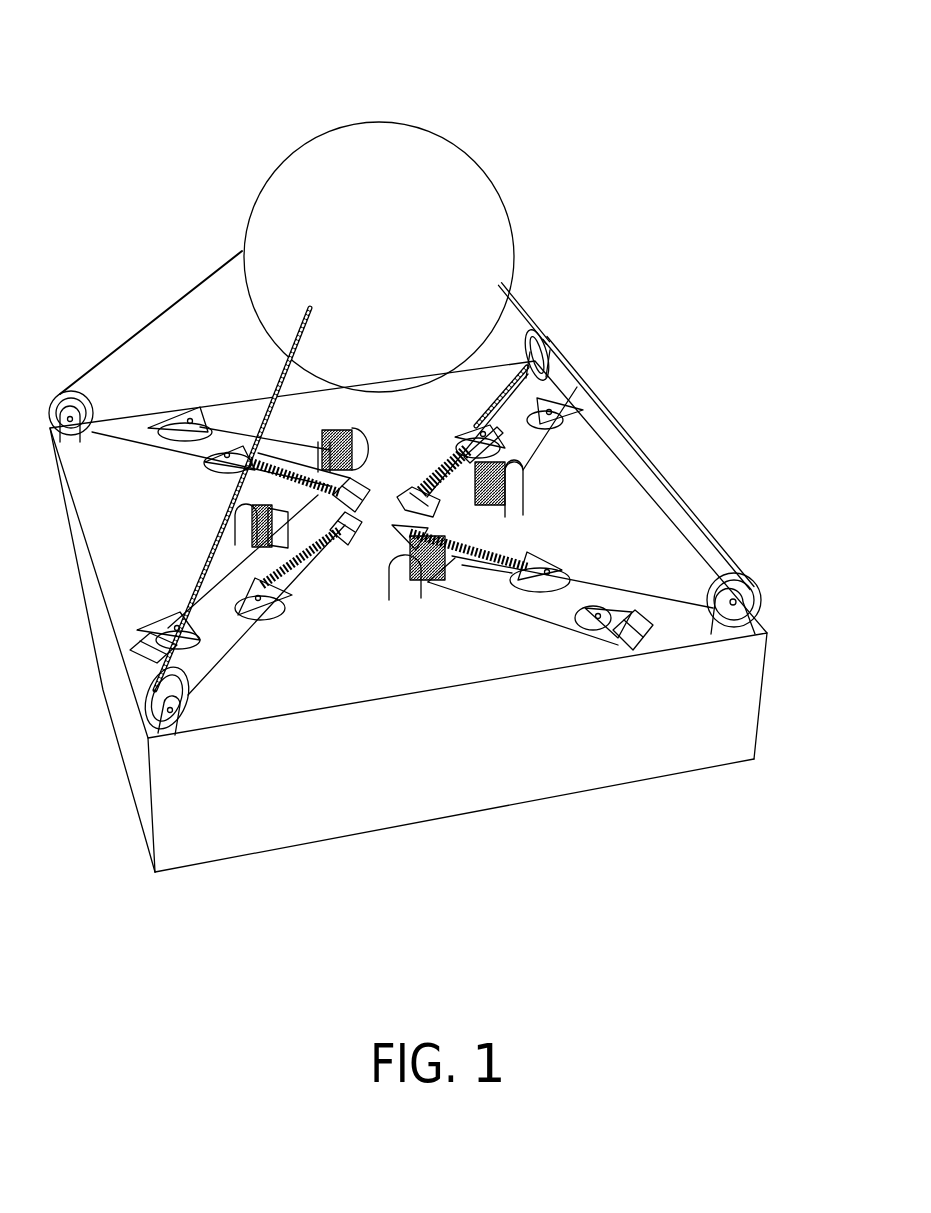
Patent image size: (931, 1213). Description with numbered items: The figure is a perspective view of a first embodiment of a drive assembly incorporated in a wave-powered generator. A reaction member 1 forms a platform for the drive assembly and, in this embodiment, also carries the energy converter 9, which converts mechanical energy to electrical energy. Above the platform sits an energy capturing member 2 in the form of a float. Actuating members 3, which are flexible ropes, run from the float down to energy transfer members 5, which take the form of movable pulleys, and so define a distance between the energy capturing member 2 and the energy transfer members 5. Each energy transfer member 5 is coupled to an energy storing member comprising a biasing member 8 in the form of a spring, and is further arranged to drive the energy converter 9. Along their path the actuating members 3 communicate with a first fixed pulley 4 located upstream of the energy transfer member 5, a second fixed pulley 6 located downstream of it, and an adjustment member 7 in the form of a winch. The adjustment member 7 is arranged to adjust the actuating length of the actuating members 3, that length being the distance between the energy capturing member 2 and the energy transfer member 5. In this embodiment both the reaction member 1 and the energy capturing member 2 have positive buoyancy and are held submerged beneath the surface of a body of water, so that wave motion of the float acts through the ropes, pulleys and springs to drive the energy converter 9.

The reaction member 1 is at (260, 825).
The energy capturing member 2 is at (360, 152).
The actuating members 3 is at (170, 307).
The first fixed pulley 4 is at (758, 589).
The energy transfer members 5 is at (550, 565).
The second fixed pulley 6 is at (607, 640).
The adjustment member 7 is at (420, 598).
The biasing member 8 is at (502, 548).
The energy converter 9 is at (458, 558).